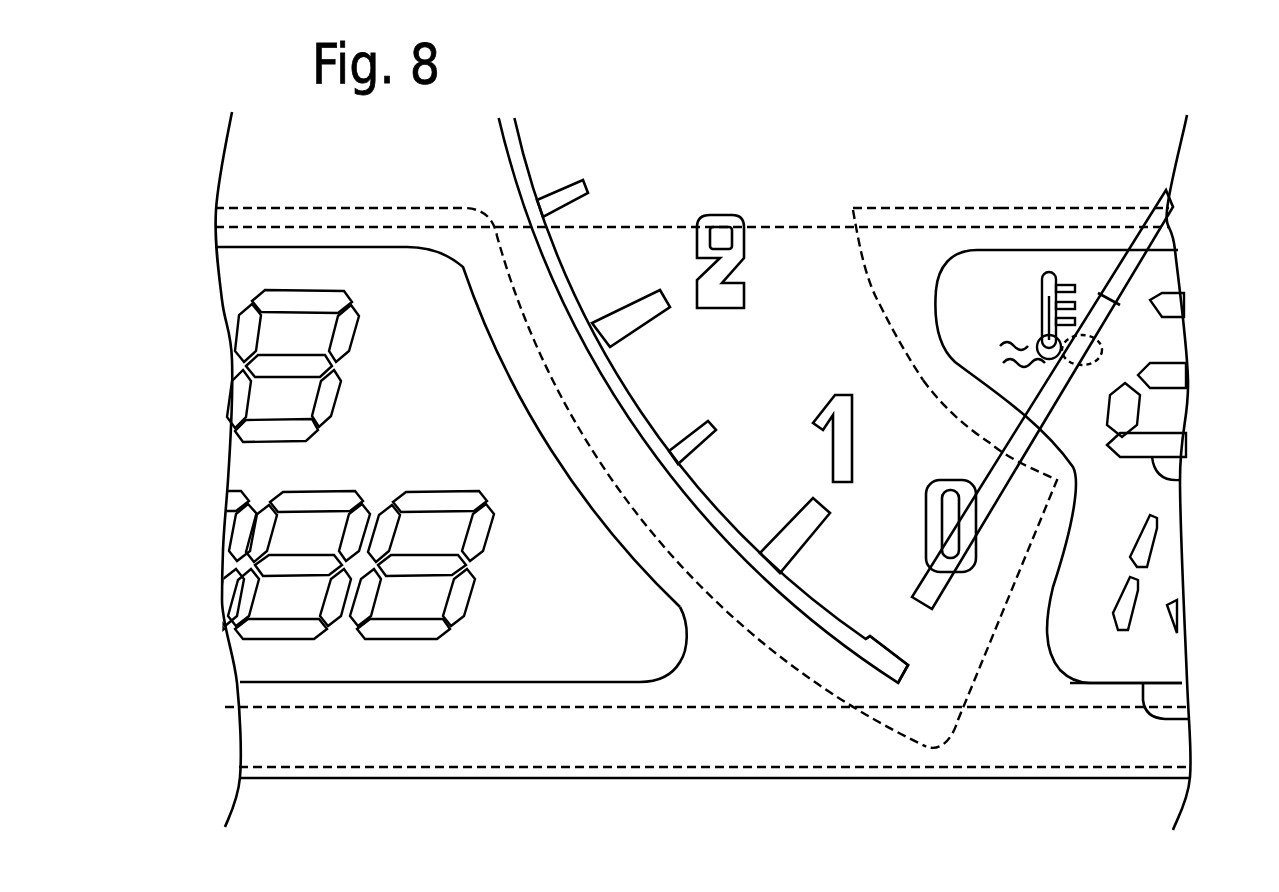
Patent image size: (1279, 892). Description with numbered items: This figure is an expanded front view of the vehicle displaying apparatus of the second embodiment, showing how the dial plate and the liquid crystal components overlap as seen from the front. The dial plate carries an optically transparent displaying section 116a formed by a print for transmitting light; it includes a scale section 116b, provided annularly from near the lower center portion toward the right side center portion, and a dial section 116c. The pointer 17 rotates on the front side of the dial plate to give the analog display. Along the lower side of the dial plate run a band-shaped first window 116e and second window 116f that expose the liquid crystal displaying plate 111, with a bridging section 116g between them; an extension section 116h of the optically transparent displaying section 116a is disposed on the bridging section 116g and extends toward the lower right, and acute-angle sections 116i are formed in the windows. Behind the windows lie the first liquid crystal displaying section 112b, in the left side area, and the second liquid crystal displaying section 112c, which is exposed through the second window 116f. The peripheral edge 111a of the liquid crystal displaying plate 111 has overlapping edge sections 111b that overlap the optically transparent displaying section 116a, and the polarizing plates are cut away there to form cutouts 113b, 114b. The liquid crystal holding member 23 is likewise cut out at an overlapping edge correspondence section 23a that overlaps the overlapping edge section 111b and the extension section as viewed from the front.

The liquid crystal displaying plate 111 is at (345, 235).
The peripheral edge 111a is at (407, 227).
The overlapping edge section 111b is at (525, 212).
The first liquid crystal displaying section 112b is at (303, 640).
The second liquid crystal displaying section 112c is at (1150, 458).
The cutout 113b is at (868, 295).
The cutout 114b is at (870, 300).
The optically transparent displaying section 116a is at (633, 120).
The scale section 116b is at (535, 172).
The dial section 116c is at (700, 216).
The first window 116e is at (265, 683).
The second window 116f is at (1185, 720).
The bridging section 116g is at (697, 605).
The extension section 116h is at (838, 642).
The acute-angle section 116i is at (930, 292).
The pointer 17 is at (1163, 190).
The liquid crystal holding member 23 is at (1025, 208).
The overlapping edge correspondence section 23a is at (853, 210).